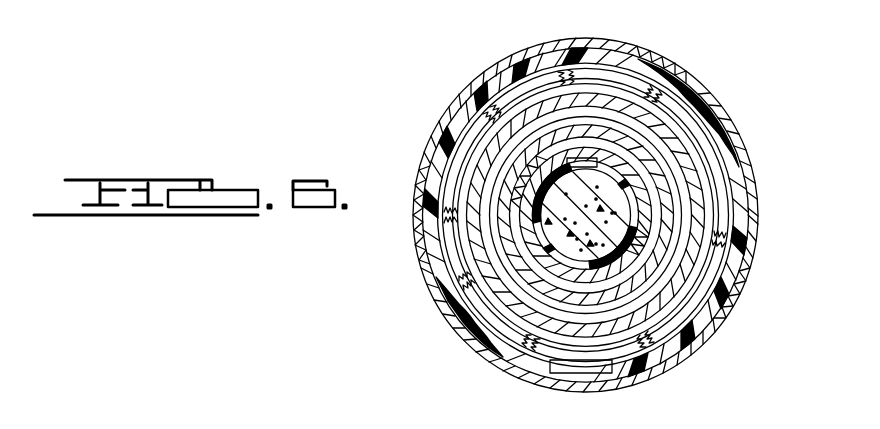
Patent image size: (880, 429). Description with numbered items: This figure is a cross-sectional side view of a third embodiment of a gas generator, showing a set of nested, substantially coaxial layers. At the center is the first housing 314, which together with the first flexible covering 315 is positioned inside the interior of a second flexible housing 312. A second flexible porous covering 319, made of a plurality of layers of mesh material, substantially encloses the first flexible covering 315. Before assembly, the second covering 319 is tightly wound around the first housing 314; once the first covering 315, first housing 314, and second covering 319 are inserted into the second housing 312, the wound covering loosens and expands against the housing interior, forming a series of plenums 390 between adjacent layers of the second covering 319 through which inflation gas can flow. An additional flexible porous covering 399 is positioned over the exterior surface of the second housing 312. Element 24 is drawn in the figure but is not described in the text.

The additional flexible porous covering 399 is at (712, 105).
The second flexible housing 312 is at (677, 337).
The second flexible porous covering 319 is at (718, 245).
The plenums 390 is at (490, 265).
The first flexible covering 315 is at (523, 185).
The conductor shield 24 is at (637, 227).
The first housing 314 is at (624, 196).